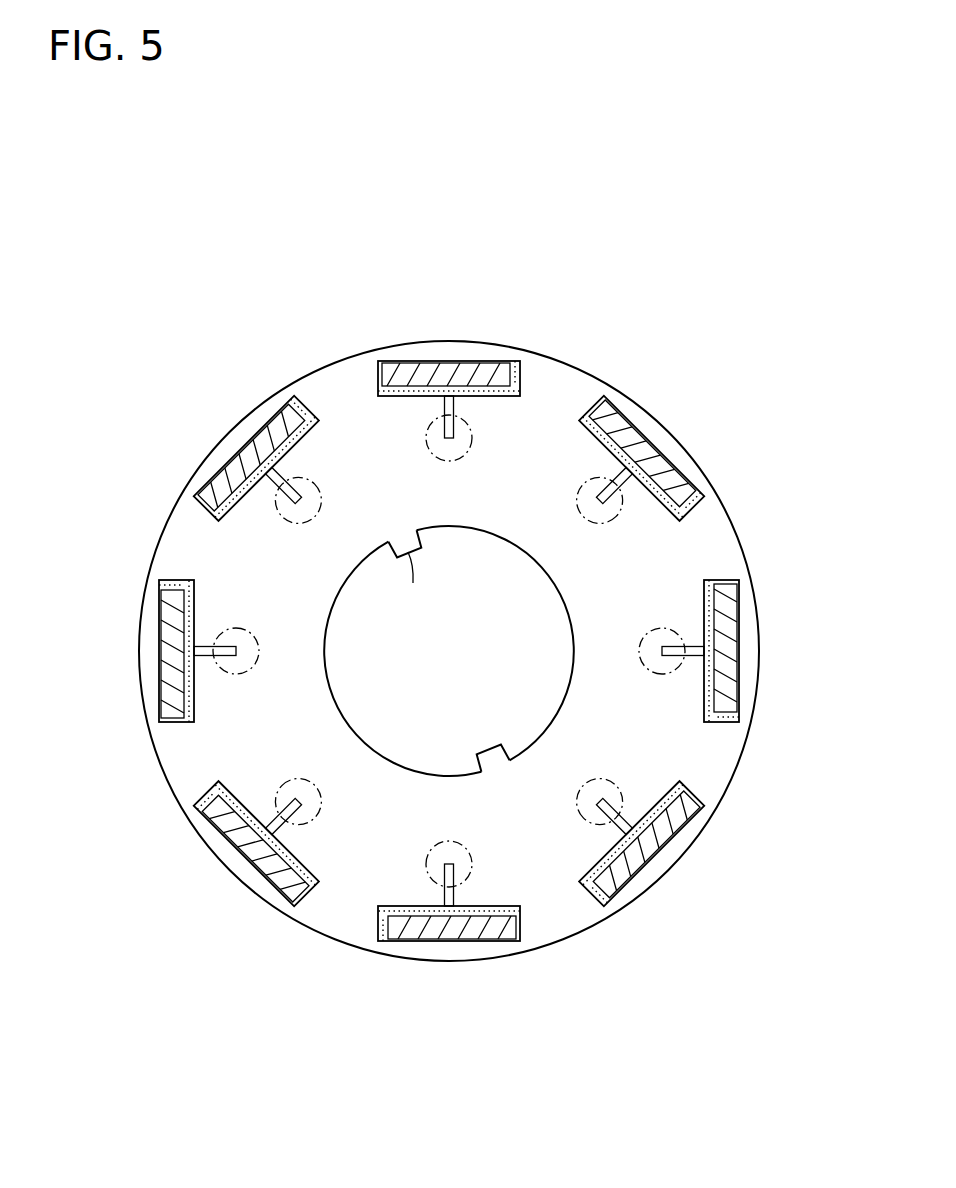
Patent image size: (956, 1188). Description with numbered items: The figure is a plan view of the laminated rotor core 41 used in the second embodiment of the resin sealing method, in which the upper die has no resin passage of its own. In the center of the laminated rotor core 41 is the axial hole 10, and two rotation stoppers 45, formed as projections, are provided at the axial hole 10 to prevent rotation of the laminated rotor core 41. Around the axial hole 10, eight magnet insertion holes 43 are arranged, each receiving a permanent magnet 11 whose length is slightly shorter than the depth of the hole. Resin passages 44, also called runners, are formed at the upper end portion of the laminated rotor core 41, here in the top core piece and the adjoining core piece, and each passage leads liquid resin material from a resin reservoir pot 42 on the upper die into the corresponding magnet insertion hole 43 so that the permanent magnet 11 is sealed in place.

The axial hole 10 is at (488, 680).
The permanent magnets 11 is at (647, 457).
The laminated rotor core 41 is at (742, 770).
The resin reservoir pots 42 is at (583, 478).
The magnet insertion holes 43 is at (665, 512).
The resin passages 44 is at (447, 403).
The rotation stoppers 45 is at (487, 750).